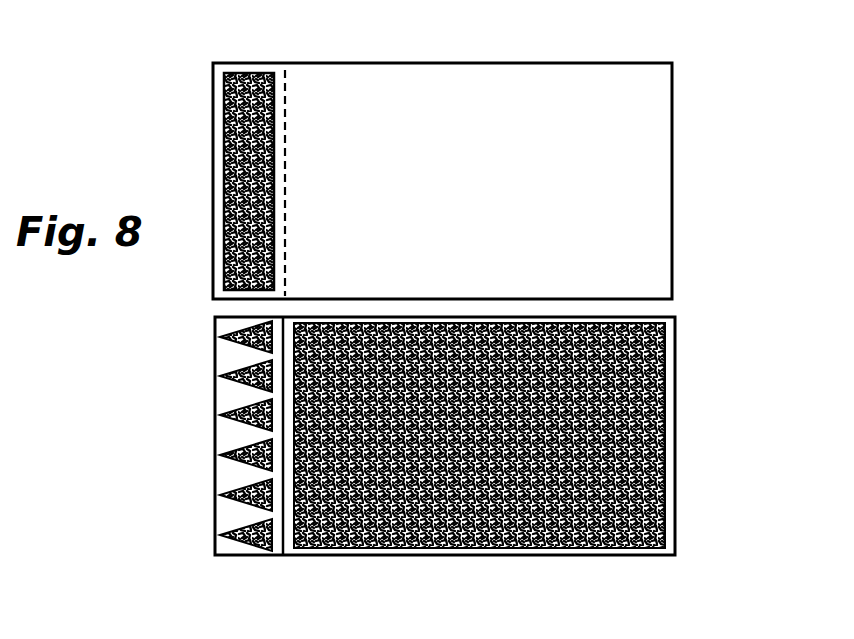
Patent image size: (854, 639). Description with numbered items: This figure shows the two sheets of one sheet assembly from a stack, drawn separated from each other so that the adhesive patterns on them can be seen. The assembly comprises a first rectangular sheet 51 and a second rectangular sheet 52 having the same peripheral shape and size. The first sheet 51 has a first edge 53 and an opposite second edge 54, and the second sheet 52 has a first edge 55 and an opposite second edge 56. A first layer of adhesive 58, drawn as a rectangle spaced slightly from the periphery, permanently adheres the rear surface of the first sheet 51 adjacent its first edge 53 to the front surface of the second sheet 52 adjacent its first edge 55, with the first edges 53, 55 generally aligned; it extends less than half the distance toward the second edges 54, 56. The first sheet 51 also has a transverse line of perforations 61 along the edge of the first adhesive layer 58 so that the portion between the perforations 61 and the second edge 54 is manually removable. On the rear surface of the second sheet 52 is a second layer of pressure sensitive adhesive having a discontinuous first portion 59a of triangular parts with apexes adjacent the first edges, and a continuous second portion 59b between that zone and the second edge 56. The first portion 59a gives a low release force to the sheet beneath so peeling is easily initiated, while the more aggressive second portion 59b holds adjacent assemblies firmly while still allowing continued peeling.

The first sheet 51 is at (457, 157).
The second sheet 52 is at (433, 446).
The first edge of the first sheet 53 is at (206, 181).
The second edge of the first sheet 54 is at (672, 124).
The first edge of the second sheet 55 is at (215, 361).
The second edge of the second sheet 56 is at (675, 342).
The first layer of adhesive 58 is at (224, 163).
The first portion of the second layer of pressure sensitive adhesive 59a is at (225, 457).
The second portion of the second layer of pressure sensitive adhesive 59b is at (437, 543).
The line of perforations 61 is at (287, 95).